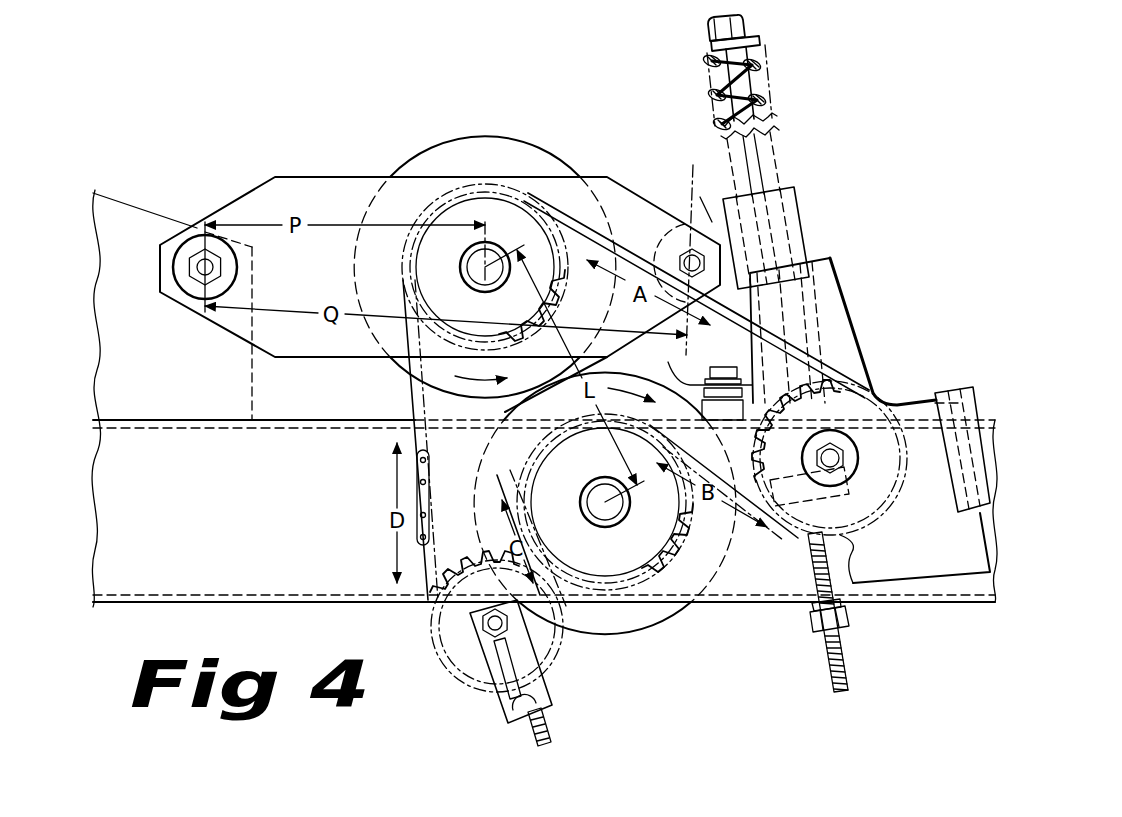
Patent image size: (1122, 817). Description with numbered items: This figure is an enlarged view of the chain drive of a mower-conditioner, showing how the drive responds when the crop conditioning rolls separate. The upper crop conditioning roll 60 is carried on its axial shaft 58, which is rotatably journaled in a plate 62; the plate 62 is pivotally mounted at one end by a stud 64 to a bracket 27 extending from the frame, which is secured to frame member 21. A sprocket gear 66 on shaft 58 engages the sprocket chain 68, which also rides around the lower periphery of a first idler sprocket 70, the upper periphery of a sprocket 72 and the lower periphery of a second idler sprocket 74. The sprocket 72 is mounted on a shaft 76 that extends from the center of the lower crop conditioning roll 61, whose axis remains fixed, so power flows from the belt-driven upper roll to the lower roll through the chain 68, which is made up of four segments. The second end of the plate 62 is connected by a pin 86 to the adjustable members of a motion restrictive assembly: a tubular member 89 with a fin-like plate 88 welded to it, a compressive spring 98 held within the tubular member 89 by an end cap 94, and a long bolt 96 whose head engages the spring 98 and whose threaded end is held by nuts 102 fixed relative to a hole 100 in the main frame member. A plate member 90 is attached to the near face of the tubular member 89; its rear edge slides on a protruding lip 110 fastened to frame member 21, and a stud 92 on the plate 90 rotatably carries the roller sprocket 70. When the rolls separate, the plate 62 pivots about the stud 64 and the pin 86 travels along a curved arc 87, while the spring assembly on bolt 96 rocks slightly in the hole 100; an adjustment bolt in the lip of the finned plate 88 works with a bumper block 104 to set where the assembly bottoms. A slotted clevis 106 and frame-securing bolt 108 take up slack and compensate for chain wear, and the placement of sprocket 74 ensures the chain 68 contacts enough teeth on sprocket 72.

The frame member 21 is at (923, 603).
The bracket 27 is at (136, 208).
The shaft 58 is at (467, 259).
The upper crop conditioning roll 60 is at (497, 138).
The lower crop conditioning roll 61 is at (620, 630).
The plate 62 is at (318, 177).
The stud 64 is at (190, 268).
The sprocket gear 66 is at (560, 300).
The sprocket chain 68 is at (431, 460).
The first idler sprocket 70 is at (762, 445).
The sprocket 72 is at (680, 536).
The second idler sprocket 74 is at (480, 562).
The shaft 76 is at (597, 518).
The pin 86 is at (681, 251).
The curved arc 87 is at (688, 166).
The fin-like plate 88 is at (702, 196).
The tubular member 89 is at (802, 225).
The plate member 90 is at (846, 286).
The stud 92 is at (852, 458).
The end cap 94 is at (880, 512).
The long bolt 96 is at (853, 556).
The compressive spring 98 is at (762, 59).
The hole 100 is at (806, 606).
The nuts 102 is at (852, 624).
The bumper block 104 is at (690, 385).
The slotted clevis 106 is at (503, 714).
The frame-securing bolt 108 is at (549, 727).
The protruding lip 110 is at (950, 388).